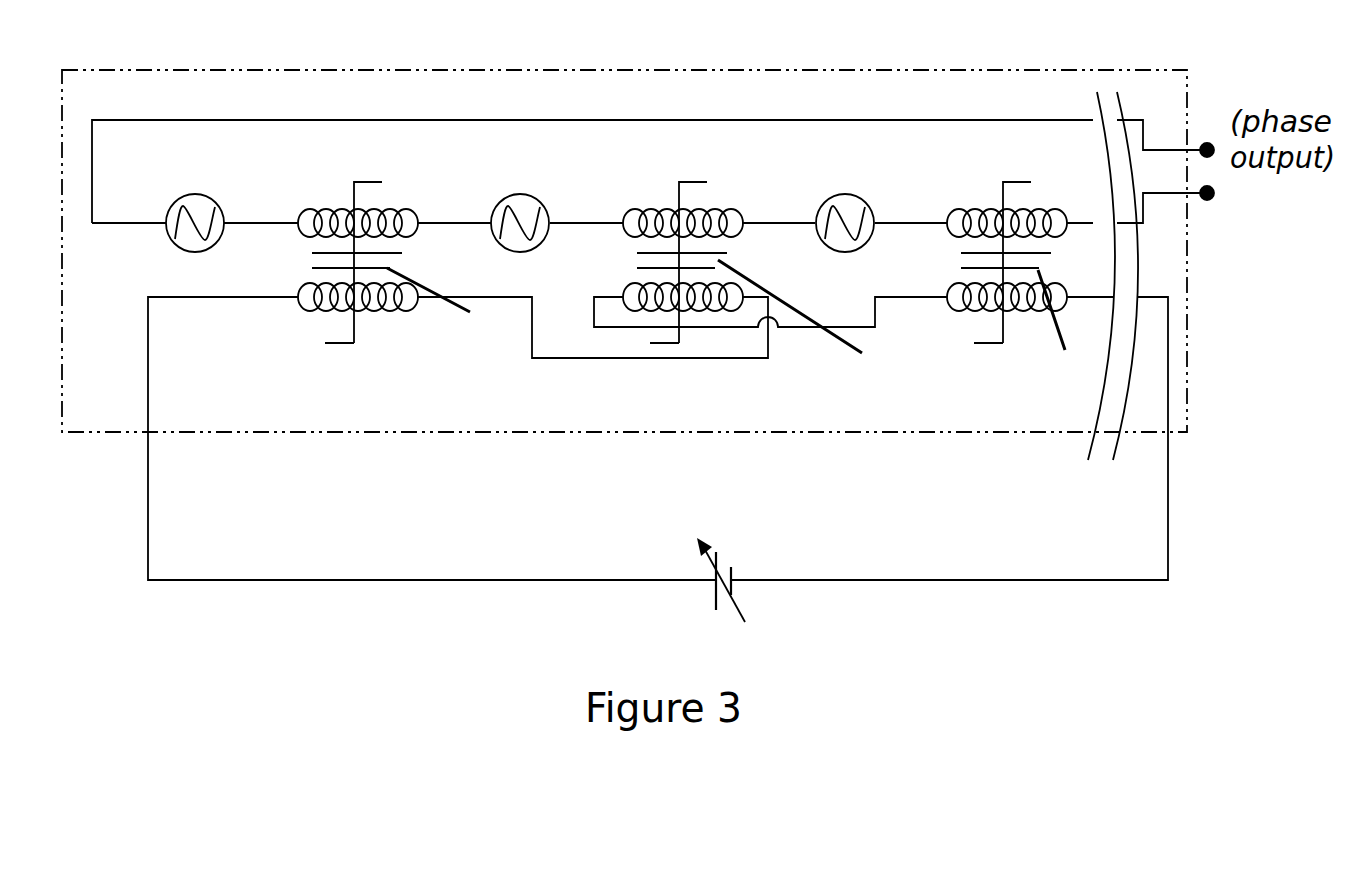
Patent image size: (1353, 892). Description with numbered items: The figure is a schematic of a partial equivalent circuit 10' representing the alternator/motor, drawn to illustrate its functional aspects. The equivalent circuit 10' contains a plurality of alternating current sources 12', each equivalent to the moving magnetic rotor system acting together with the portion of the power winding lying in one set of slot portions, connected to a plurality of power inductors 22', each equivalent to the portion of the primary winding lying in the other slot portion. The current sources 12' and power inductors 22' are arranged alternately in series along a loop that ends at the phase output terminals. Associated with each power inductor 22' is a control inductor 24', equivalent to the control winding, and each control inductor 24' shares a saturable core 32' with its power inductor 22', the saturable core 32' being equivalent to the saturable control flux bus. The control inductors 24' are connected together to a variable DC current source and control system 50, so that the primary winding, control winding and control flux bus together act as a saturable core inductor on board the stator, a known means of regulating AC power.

The equivalent circuit 10' is at (624, 234).
The alternating current source 12' is at (495, 217).
The power inductor 22' is at (662, 262).
The control inductor 24' is at (662, 283).
The saturable core 32' is at (740, 331).
The variable DC current source and control system 50 is at (695, 573).